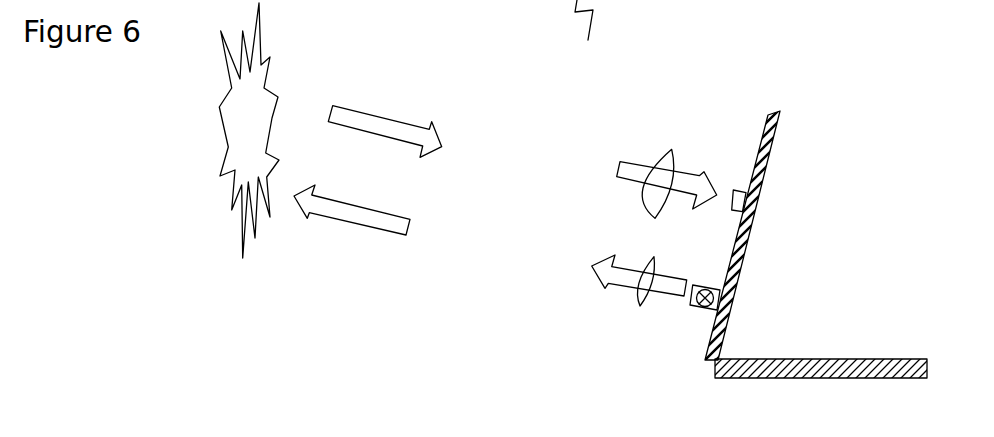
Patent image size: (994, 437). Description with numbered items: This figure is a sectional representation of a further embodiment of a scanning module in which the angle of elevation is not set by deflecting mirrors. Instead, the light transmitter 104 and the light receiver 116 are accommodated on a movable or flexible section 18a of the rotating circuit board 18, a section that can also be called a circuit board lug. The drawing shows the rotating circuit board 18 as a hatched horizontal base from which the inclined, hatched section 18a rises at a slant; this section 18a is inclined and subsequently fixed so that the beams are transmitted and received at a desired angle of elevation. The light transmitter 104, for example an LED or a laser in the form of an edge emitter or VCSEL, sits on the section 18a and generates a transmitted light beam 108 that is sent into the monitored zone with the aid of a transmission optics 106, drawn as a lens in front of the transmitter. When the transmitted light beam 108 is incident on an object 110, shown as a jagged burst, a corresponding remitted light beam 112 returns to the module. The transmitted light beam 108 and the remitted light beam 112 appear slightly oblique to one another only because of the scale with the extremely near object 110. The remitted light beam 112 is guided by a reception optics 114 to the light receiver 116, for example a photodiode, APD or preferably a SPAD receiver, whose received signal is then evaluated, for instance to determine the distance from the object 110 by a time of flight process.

The object 110 is at (238, 140).
The remitted light beam 112 is at (385, 122).
The transmitted light beam 108 is at (382, 232).
The reception optics 114 is at (655, 155).
The light receiver 116 is at (731, 190).
The movable section of the rotating circuit board 18a is at (777, 122).
The transmission optics 106 is at (632, 293).
The light transmitter 104 is at (702, 310).
The rotating circuit board 18 is at (716, 383).